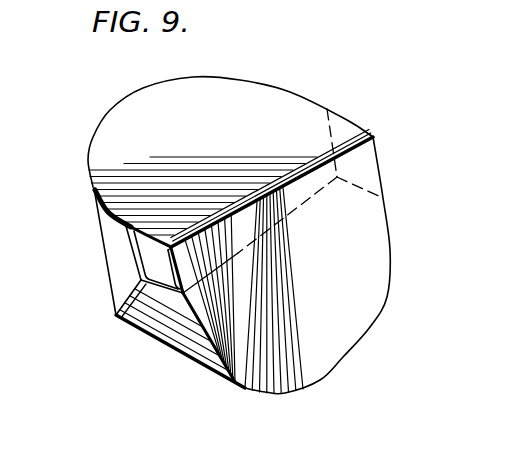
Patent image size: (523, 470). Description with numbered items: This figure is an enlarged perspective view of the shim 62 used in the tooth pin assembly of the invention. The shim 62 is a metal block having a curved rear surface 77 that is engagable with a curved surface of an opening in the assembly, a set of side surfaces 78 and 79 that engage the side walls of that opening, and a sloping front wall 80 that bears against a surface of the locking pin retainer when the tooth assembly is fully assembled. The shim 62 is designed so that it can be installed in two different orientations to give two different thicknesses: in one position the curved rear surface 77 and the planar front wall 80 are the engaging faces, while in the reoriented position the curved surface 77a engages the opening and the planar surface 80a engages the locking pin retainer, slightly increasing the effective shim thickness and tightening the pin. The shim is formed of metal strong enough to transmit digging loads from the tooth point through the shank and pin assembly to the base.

The shim 62 is at (80, 118).
The curved rear surface 77 is at (113, 250).
The curved surface 77a is at (173, 343).
The side surface 78 is at (155, 265).
The side surface 79 is at (375, 163).
The sloping front wall 80 is at (358, 297).
The planar surface 80a is at (277, 118).